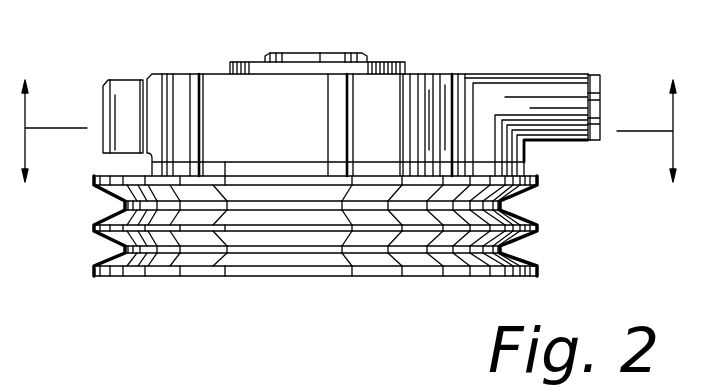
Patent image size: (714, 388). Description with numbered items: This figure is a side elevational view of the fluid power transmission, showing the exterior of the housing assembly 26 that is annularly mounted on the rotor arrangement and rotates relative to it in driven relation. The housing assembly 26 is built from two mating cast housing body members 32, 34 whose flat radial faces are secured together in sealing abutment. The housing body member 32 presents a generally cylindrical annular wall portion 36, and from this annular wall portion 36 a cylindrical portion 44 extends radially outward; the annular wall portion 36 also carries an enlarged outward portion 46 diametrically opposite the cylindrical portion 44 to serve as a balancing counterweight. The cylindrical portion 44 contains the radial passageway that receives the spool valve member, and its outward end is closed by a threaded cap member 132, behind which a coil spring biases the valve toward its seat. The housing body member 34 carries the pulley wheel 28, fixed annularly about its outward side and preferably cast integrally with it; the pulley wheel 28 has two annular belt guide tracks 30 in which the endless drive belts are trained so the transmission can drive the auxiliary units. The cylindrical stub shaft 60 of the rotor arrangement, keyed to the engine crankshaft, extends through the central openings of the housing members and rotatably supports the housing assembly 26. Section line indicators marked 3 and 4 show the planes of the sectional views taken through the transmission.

The housing assembly 26 is at (200, 73).
The pulley wheel 28 is at (332, 258).
The annular belt guide tracks 30 is at (517, 203).
The housing body member 32 is at (413, 78).
The housing body member 34 is at (267, 171).
The annular wall portion 36 is at (278, 126).
The cylindrical portion 44 is at (530, 80).
The enlarged outward portion 46 is at (131, 88).
The stub shaft 60 is at (263, 53).
The cap member 132 is at (603, 90).
The section line 3- 3 is at (347, 203).
The section line 4- 4 is at (347, 116).